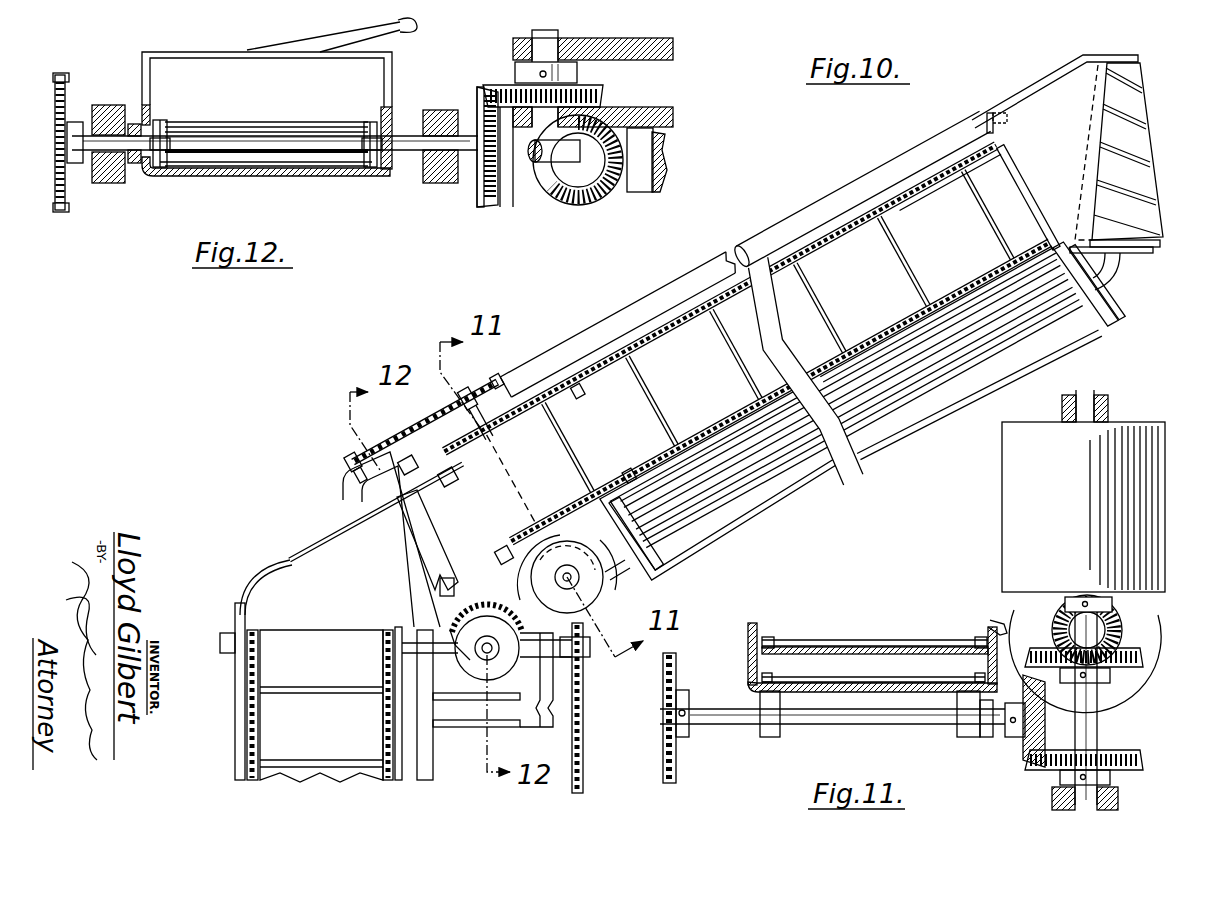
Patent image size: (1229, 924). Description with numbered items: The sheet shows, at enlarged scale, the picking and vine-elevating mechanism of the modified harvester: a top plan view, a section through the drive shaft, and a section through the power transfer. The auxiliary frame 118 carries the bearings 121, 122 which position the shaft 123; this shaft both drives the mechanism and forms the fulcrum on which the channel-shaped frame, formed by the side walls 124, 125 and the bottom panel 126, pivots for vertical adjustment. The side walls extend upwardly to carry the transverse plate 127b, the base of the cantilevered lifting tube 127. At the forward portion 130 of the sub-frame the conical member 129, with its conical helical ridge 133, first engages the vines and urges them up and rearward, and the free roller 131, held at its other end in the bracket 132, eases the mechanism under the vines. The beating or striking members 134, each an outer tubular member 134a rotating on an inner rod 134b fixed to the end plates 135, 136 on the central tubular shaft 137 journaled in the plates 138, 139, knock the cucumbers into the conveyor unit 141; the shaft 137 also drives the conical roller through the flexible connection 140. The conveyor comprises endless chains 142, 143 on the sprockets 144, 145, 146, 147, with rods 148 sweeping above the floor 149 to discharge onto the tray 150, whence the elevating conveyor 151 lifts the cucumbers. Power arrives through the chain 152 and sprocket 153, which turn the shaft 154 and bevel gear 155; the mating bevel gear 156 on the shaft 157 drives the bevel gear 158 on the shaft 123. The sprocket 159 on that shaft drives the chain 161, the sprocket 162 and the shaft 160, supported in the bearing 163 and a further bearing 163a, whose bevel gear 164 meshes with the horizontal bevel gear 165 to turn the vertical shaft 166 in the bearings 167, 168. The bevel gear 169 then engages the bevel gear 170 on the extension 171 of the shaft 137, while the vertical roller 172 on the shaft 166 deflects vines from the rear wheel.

In FIG. 12, the auxiliary frame 118 is at (672, 62).
In FIG. 12, the bearing 121 is at (108, 185).
In FIG. 12, the bearing 122 is at (440, 185).
In FIG. 12, the shaft 123 is at (278, 148).
In FIG. 12, the side wall 124 is at (143, 82).
In FIG. 11, the side wall 124 is at (755, 632).
In FIG. 12, the side wall 125 is at (393, 90).
In FIG. 11, the side wall 125 is at (995, 630).
In FIG. 12, the bottom panel 126 is at (238, 178).
In FIG. 11, the bottom panel 126 is at (910, 693).
In FIG. 12, the lifting tube 127 is at (414, 30).
In FIG. 12, the transverse plate 127b is at (255, 50).
In FIG. 10, the conical member 129 is at (1135, 100).
In FIG. 10, the forward portion of the sub-frame 130 is at (1062, 78).
In FIG. 10, the free roller 131 is at (845, 185).
In FIG. 10, the bracket 132 is at (512, 388).
In FIG. 10, the conical helical ridge 133 is at (1140, 160).
In FIG. 10, the beating or striking members 134 is at (1040, 320).
In FIG. 10, the outer tubular member 134a is at (905, 370).
In FIG. 10, the inner rod 134b is at (1060, 285).
In FIG. 10, the end plate 135 is at (1110, 312).
In FIG. 10, the end plate 136 is at (665, 562).
In FIG. 10, the central tubular shaft 137 is at (760, 480).
In FIG. 10, the plate 138 is at (620, 575).
In FIG. 11, the plate 138 is at (1145, 672).
In FIG. 10, the plate 139 is at (1108, 300).
In FIG. 10, the flexible connection 140 is at (1120, 268).
In FIG. 10, the conveyor unit 141 is at (880, 317).
In FIG. 12, the endless chain 142 is at (160, 120).
In FIG. 10, the endless chain 142 is at (580, 395).
In FIG. 12, the endless chain 143 is at (370, 122).
In FIG. 10, the endless chain 143 is at (640, 492).
In FIG. 12, the sprocket 144 is at (165, 160).
In FIG. 10, the sprocket 144 is at (425, 475).
In FIG. 12, the sprocket 145 is at (348, 165).
In FIG. 10, the sprocket 145 is at (440, 585).
In FIG. 10, the sprocket 146 is at (1000, 150).
In FIG. 10, the sprocket 147 is at (1025, 250).
In FIG. 12, the rods 148 is at (248, 128).
In FIG. 10, the rods 148 is at (745, 372).
In FIG. 11, the rods 148 is at (815, 640).
In FIG. 12, the floor 149 is at (185, 123).
In FIG. 10, the tray 150 is at (285, 578).
In FIG. 10, the elevating conveyor 151 is at (332, 738).
In FIG. 10, the chain 152 is at (585, 755).
In FIG. 10, the sprocket 153 is at (585, 660).
In FIG. 12, the shaft 154 is at (550, 162).
In FIG. 10, the shaft 154 is at (410, 650).
In FIG. 12, the bevel gear 155 is at (606, 200).
In FIG. 10, the bevel gear 155 is at (512, 675).
In FIG. 12, the bevel gear 156 is at (592, 86).
In FIG. 10, the bevel gear 156 is at (478, 690).
In FIG. 12, the shaft 157 is at (532, 52).
In FIG. 10, the shaft 157 is at (455, 690).
In FIG. 12, the bevel gear 158 is at (487, 210).
In FIG. 10, the sprocket 159 is at (350, 455).
In FIG. 10, the shaft 160 is at (470, 412).
In FIG. 11, the shaft 160 is at (735, 728).
In FIG. 10, the chain 161 is at (418, 425).
In FIG. 10, the sprocket 162 is at (470, 388).
In FIG. 11, the sprocket 162 is at (683, 690).
In FIG. 11, the bearing 163 is at (772, 737).
In FIG. 11, the bearing 163a is at (985, 737).
In FIG. 11, the bevel gear 164 is at (1025, 755).
In FIG. 11, the horizontal bevel gear 165 is at (1140, 752).
In FIG. 11, the vertical shaft 166 is at (1098, 722).
In FIG. 11, the bearing 167 is at (1118, 798).
In FIG. 10, the bearing 168 is at (505, 558).
In FIG. 11, the bearing 168 is at (1110, 408).
In FIG. 11, the bevel gear 169 is at (1138, 652).
In FIG. 11, the bevel gear 170 is at (1120, 615).
In FIG. 10, the extension 171 is at (615, 580).
In FIG. 10, the vertical roller 172 is at (555, 580).
In FIG. 11, the vertical roller 172 is at (1020, 462).